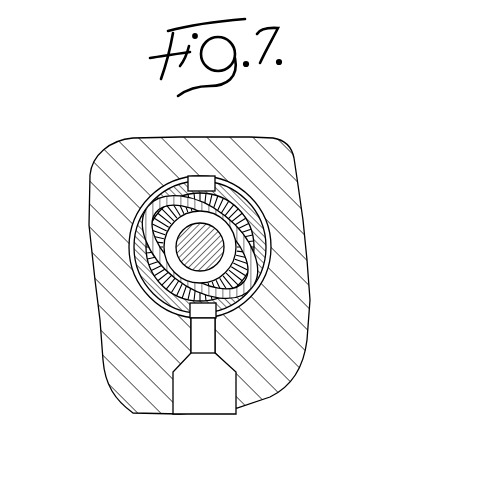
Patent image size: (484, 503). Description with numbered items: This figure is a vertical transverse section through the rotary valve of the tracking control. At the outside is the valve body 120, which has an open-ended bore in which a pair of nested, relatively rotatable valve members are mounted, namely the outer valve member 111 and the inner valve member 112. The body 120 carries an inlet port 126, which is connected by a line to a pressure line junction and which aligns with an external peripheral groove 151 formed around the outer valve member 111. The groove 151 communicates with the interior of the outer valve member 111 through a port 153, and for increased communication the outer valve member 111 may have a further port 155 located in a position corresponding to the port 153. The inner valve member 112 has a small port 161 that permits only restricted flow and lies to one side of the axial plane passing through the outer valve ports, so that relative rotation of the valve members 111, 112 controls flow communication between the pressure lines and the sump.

The body 120 is at (287, 302).
The inlet port 126 is at (235, 393).
The external peripheral groove 151 is at (273, 252).
The outer valve member 111 is at (148, 277).
The inner valve member 112 is at (250, 233).
The port 161 is at (177, 210).
The port 153 is at (214, 184).
The port 155 is at (218, 312).